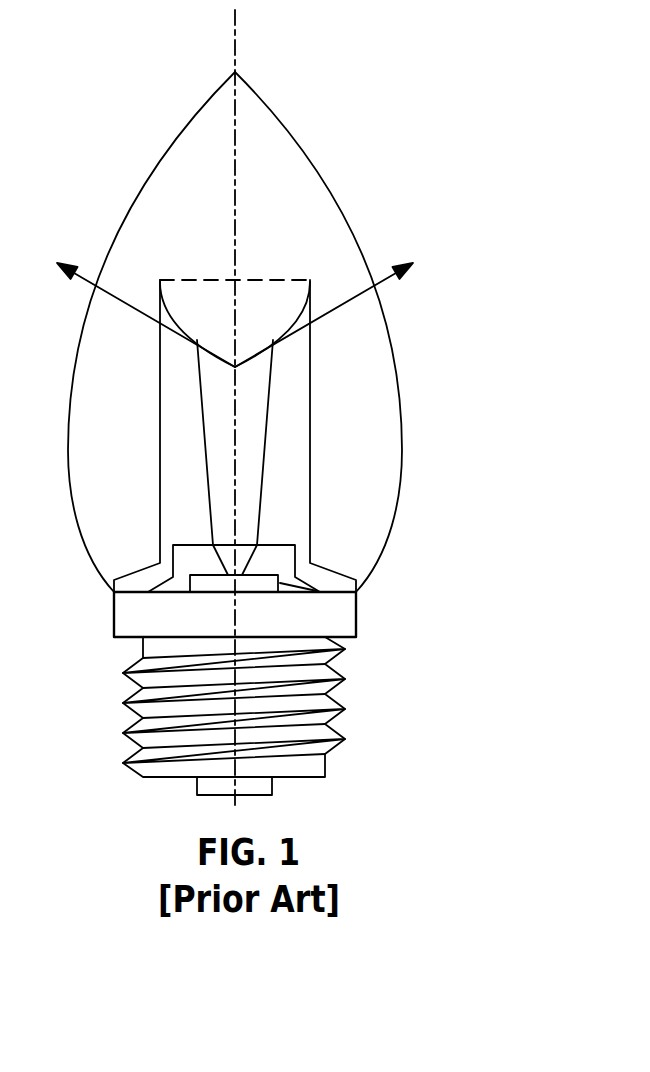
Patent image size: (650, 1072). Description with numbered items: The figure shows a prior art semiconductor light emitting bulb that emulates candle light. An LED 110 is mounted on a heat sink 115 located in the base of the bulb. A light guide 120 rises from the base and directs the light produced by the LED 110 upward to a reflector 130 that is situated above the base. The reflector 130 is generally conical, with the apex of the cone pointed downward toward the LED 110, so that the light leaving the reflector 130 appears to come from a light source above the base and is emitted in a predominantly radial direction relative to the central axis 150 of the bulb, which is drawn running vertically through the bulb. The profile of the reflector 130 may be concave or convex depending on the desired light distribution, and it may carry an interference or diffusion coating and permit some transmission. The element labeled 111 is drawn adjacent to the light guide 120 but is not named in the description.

The LED 110 is at (233, 563).
The inner envelope / light guide 111 is at (267, 428).
The heat sink 115 is at (356, 592).
The light guide 120 is at (310, 457).
The reflector 130 is at (263, 310).
The central axis 150 is at (235, 173).